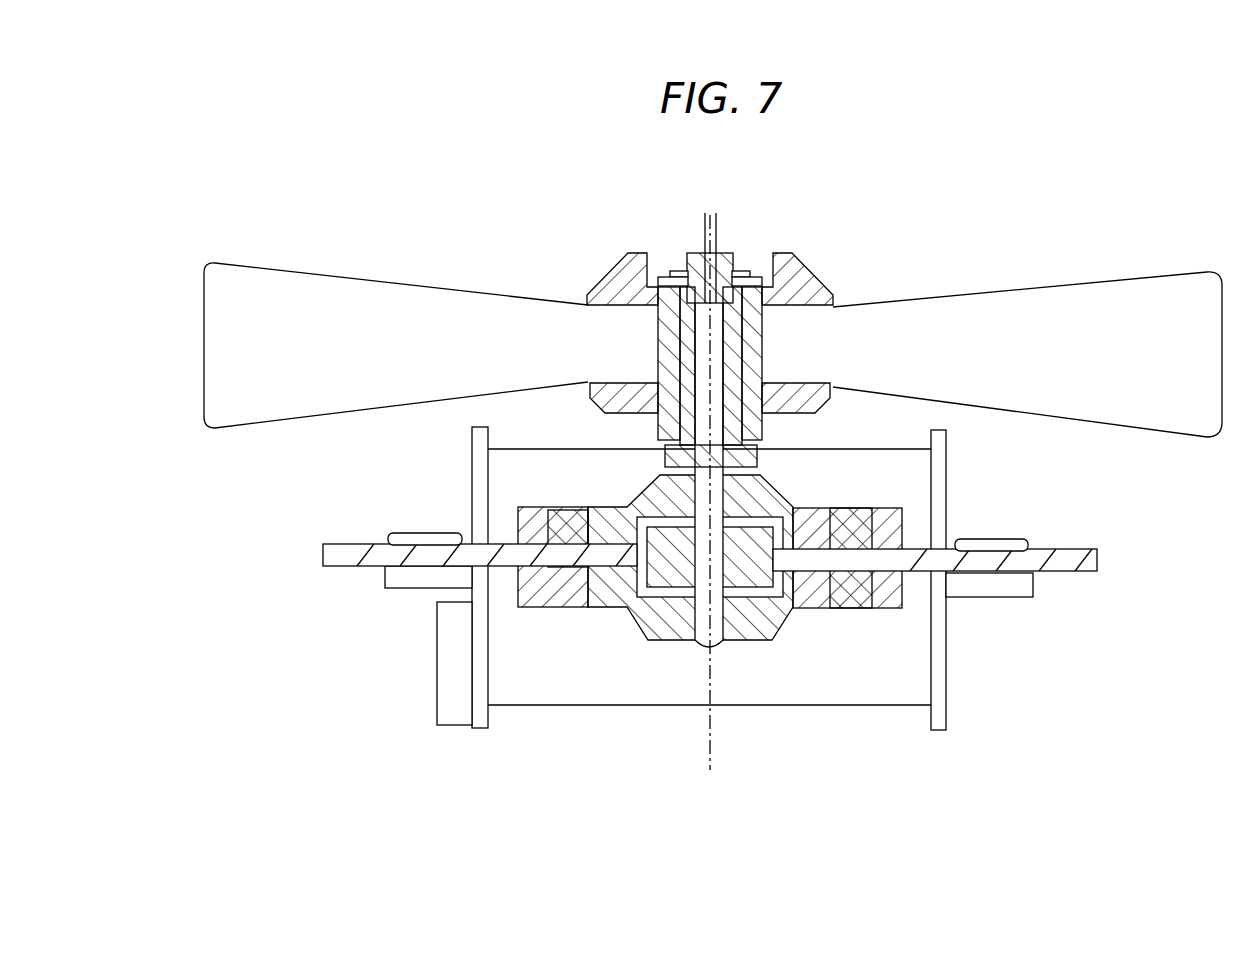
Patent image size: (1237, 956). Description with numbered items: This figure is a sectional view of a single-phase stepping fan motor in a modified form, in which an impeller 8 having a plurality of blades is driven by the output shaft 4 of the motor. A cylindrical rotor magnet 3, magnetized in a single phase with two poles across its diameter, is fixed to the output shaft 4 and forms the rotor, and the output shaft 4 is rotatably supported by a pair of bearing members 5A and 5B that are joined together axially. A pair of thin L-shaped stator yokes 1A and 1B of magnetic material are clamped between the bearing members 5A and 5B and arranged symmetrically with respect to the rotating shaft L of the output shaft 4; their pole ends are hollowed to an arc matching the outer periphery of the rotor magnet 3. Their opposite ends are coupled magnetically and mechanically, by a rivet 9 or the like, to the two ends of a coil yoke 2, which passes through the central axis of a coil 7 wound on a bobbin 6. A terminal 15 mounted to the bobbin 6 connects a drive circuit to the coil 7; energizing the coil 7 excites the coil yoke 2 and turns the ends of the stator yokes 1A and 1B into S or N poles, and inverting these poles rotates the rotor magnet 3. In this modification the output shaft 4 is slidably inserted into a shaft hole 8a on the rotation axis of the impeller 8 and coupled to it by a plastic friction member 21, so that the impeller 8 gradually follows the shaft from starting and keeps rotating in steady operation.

The stator yoke 1A is at (342, 545).
The stator yoke 1B is at (1082, 549).
The coil yoke 2 is at (397, 582).
The rotor magnet 3 is at (748, 583).
The output shaft 4 is at (718, 498).
The bearing member 5A is at (603, 522).
The bearing member 5B is at (600, 600).
The bobbin 6 is at (479, 728).
The coil 7 is at (535, 690).
The impeller 8 is at (427, 298).
The shaft hole 8a is at (830, 304).
The rivet 9 is at (403, 533).
The terminal 15 is at (443, 706).
The friction member 21 is at (760, 332).
The rotating shaft L is at (700, 730).